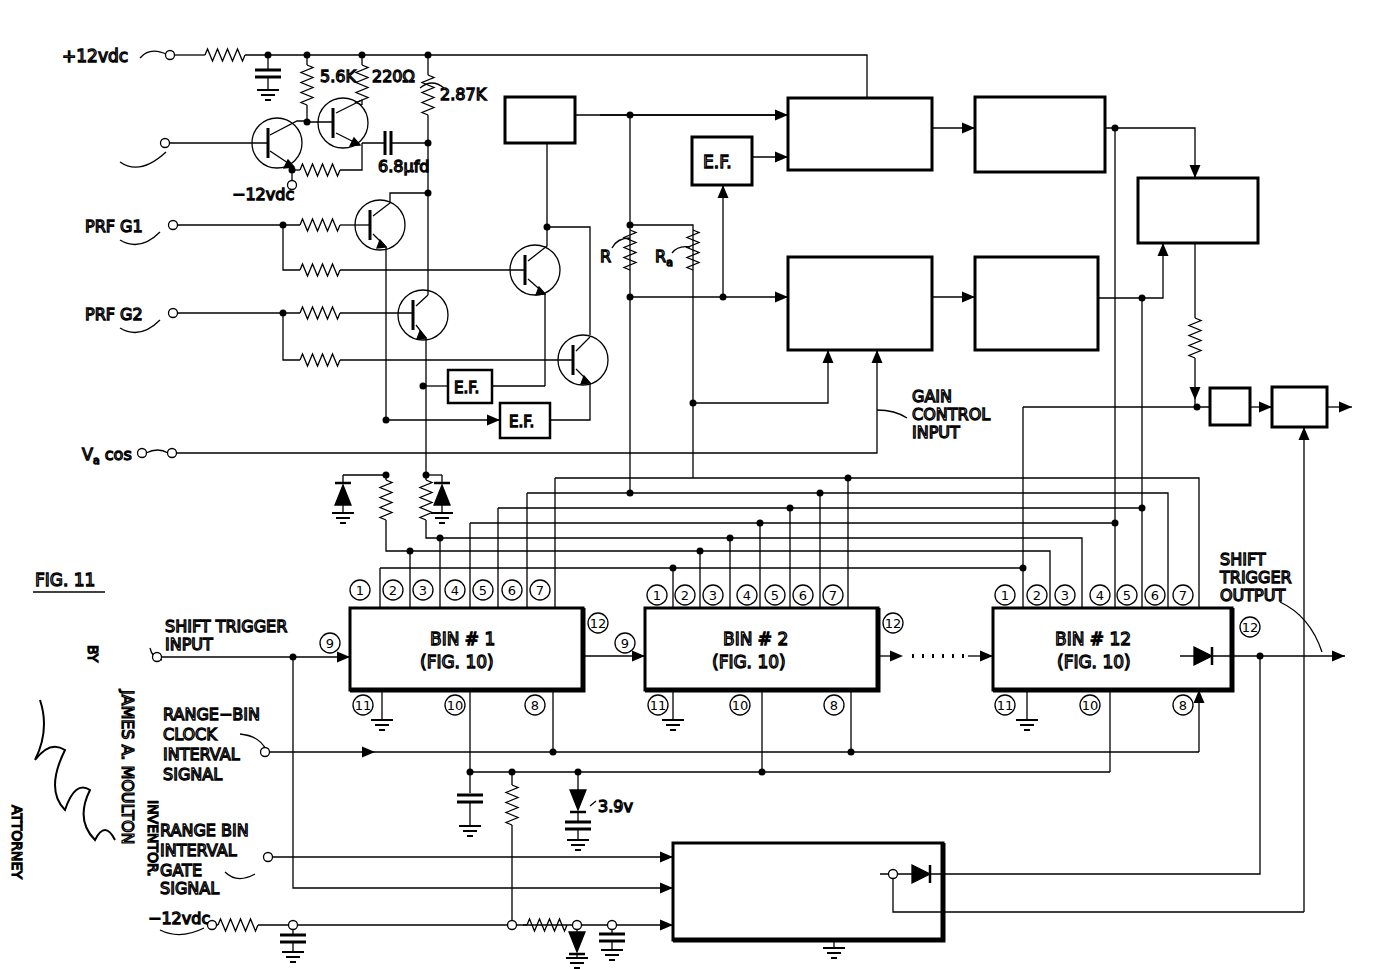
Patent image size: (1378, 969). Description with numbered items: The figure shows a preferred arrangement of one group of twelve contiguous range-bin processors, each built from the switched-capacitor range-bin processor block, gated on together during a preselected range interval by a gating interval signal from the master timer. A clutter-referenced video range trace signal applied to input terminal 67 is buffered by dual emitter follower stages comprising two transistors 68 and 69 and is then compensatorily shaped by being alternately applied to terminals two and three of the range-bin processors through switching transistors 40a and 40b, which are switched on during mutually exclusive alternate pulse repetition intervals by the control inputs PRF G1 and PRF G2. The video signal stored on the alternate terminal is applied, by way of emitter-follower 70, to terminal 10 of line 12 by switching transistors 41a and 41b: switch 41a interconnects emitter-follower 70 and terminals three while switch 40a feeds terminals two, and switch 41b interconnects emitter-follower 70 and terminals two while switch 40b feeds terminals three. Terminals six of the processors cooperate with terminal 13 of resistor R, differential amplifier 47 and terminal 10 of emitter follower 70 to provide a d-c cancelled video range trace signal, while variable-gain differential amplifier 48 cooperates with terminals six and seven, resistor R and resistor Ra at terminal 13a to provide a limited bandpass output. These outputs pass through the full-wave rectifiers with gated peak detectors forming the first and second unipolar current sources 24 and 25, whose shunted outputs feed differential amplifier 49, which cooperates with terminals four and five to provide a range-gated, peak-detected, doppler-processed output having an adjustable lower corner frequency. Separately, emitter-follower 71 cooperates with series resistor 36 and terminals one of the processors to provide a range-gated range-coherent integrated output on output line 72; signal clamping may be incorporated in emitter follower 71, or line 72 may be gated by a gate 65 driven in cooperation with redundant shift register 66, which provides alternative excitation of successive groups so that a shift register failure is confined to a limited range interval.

The terminal of emitter follower 10 is at (632, 112).
The line 12 is at (676, 115).
The terminal of resistor R 13 is at (632, 300).
The terminal of resistor Ra 13a is at (695, 403).
The first unipolar current source 24 is at (1020, 150).
The second unipolar current source 25 is at (1000, 342).
The series resistor 36 is at (1206, 344).
The switching transistor 40a is at (365, 211).
The switching transistor 40b is at (438, 320).
The switching transistor 41a is at (532, 242).
The switching transistor 41b is at (598, 372).
The first differential amplifier 47 is at (888, 158).
The variable-gain second differential amplifier 48 is at (858, 264).
The third differential amplifier 49 is at (1234, 194).
The gate 65 is at (1300, 390).
The redundant shift register 66 is at (918, 858).
The input terminal 67 is at (168, 147).
The transistor 68 is at (268, 120).
The transistor 69 is at (362, 122).
The emitter-follower 70 is at (510, 134).
The output emitter follower 71 is at (1238, 388).
The output line 72 is at (1256, 413).